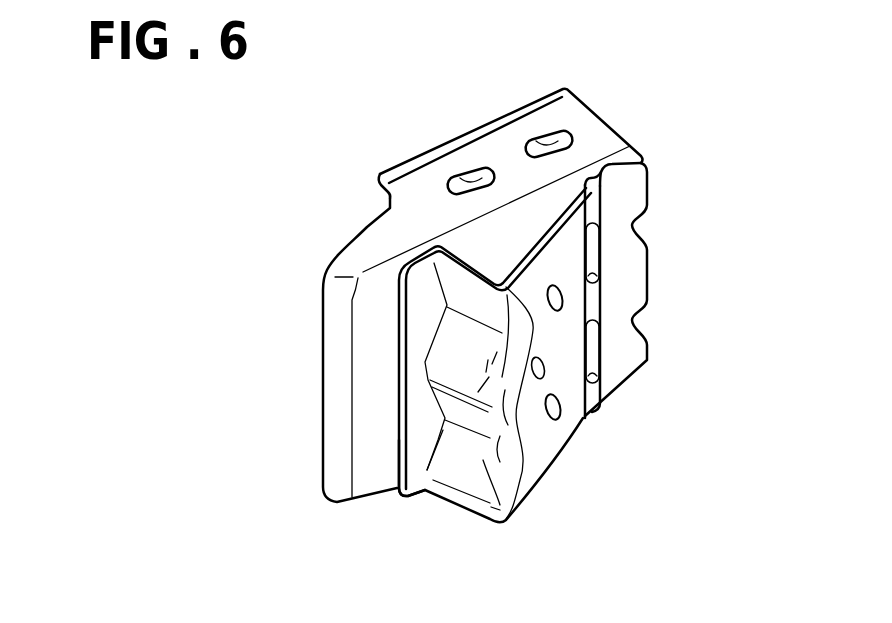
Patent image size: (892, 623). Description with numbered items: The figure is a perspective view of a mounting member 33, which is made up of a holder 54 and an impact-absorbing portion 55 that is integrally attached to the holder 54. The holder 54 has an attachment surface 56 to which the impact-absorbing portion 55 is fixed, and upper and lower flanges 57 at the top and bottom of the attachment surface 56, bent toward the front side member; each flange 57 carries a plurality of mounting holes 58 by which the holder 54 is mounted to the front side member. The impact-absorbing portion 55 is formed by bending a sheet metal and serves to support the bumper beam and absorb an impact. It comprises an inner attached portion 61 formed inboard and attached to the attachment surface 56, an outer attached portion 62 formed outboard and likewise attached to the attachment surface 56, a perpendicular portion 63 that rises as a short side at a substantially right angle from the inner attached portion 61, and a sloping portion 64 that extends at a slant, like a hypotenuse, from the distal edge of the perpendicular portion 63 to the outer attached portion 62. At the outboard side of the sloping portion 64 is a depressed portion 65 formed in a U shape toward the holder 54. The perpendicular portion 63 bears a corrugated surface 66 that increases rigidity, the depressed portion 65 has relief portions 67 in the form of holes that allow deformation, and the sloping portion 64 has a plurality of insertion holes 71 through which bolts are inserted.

The mounting member 33 is at (181, 173).
The holder 54 is at (353, 238).
The impact-absorbing portion 55 is at (397, 380).
The attachment surface 56 is at (527, 223).
The upper and lower flanges 57 is at (398, 238).
The mounting holes 58 is at (460, 178).
The inner attached portion 61 is at (416, 452).
The outer attached portion 62 is at (629, 200).
The perpendicular portion 63 is at (468, 470).
The sloping portion 64 is at (553, 452).
The depressed portion 65 is at (597, 186).
The corrugated surface 66 is at (512, 428).
The relief portions 67 is at (598, 247).
The insertion holes 71 is at (563, 290).